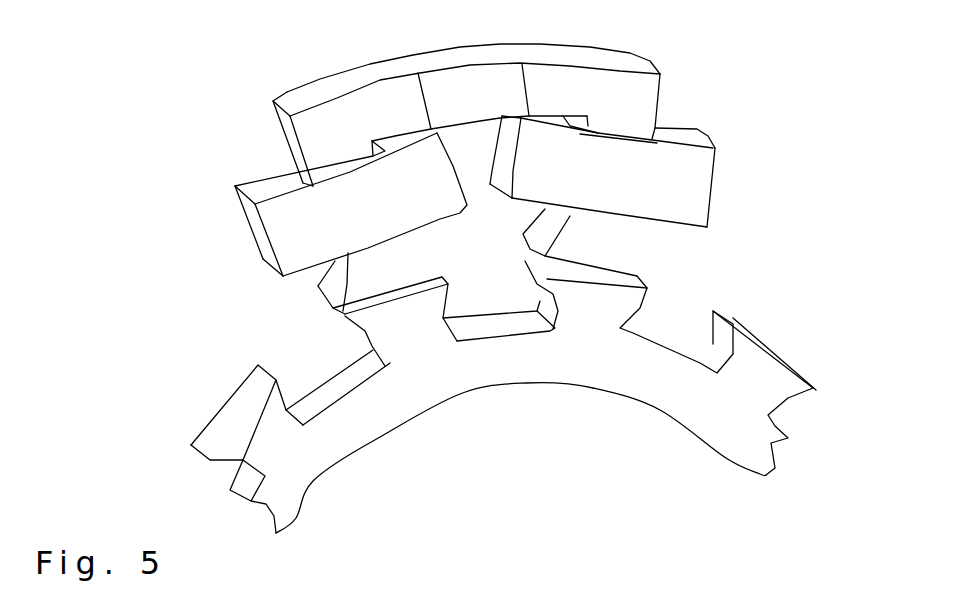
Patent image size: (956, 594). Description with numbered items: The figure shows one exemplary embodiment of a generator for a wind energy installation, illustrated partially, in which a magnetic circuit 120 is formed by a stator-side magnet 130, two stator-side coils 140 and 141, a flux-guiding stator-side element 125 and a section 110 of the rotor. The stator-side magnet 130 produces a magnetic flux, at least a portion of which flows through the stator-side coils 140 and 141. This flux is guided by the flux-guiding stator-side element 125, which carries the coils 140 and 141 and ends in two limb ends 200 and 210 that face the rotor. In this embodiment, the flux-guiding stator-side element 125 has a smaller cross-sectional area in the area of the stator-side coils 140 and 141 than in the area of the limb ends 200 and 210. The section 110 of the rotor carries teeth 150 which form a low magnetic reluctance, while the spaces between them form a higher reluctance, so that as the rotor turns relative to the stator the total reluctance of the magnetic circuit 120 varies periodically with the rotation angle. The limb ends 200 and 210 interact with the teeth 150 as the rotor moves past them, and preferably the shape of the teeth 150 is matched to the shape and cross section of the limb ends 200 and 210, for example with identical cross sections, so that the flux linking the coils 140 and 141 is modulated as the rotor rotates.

The section of a rotor 110 is at (632, 110).
The magnetic circuit 120 is at (602, 87).
The flux-guiding stator-side element 125 is at (335, 120).
The stator-side magnet 130 is at (465, 75).
The stator-side coil 140 is at (267, 181).
The stator-side coil 141 is at (693, 172).
The teeth 150 is at (263, 430).
The limb end 200 is at (375, 278).
The limb end 210 is at (603, 250).